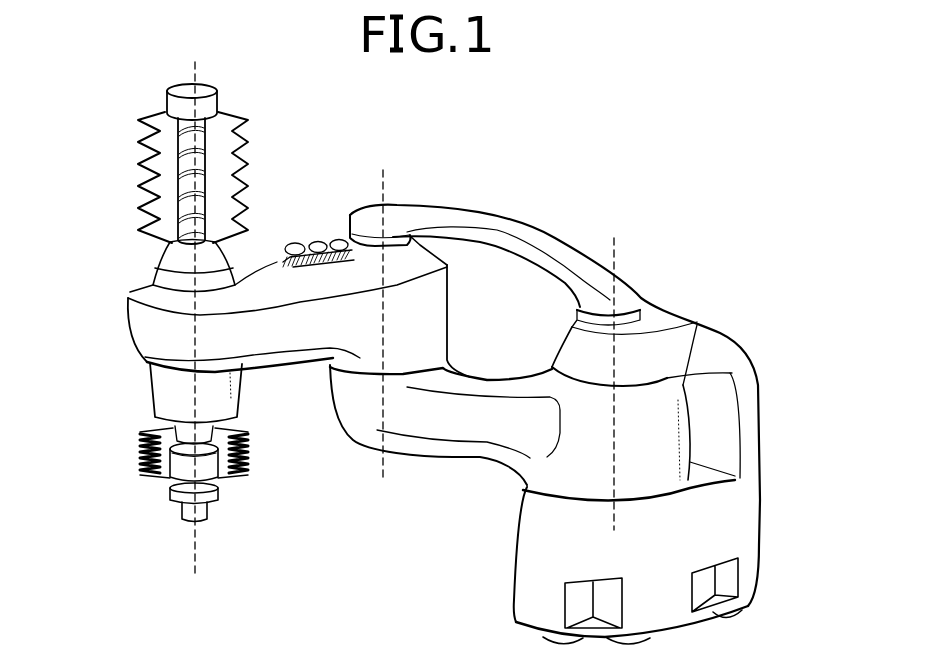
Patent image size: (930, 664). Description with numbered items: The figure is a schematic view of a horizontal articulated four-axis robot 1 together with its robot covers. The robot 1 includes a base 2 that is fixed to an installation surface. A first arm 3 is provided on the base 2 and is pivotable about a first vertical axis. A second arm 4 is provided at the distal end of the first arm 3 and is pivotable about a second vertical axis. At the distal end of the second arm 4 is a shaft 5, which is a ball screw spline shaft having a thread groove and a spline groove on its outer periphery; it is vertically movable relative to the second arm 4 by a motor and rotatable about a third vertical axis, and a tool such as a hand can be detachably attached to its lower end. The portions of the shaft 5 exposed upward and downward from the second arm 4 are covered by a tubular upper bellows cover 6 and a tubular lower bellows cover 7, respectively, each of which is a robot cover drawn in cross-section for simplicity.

The horizontal articulated four-axis robot 1 is at (690, 215).
The base 2 is at (744, 348).
The first arm 3 is at (470, 458).
The second arm 4 is at (280, 258).
The shaft 5 is at (190, 142).
The upper bellows cover 6 is at (143, 173).
The lower bellows cover 7 is at (137, 442).